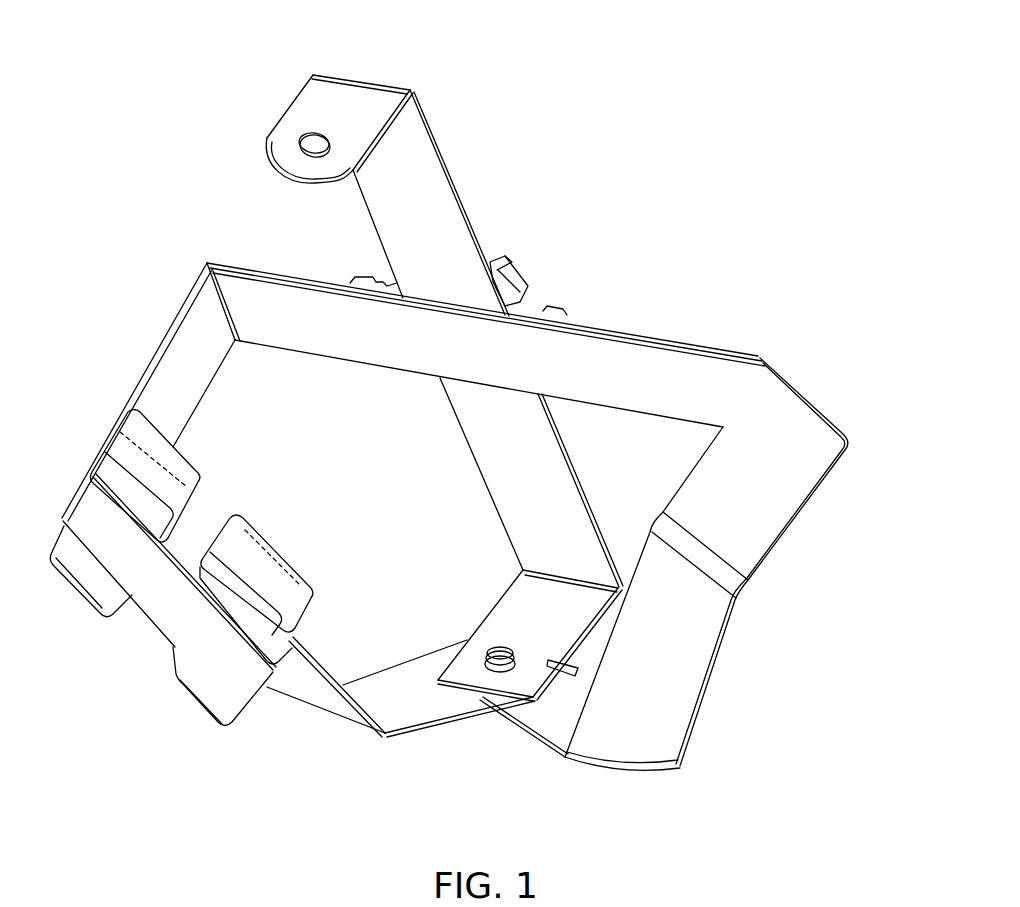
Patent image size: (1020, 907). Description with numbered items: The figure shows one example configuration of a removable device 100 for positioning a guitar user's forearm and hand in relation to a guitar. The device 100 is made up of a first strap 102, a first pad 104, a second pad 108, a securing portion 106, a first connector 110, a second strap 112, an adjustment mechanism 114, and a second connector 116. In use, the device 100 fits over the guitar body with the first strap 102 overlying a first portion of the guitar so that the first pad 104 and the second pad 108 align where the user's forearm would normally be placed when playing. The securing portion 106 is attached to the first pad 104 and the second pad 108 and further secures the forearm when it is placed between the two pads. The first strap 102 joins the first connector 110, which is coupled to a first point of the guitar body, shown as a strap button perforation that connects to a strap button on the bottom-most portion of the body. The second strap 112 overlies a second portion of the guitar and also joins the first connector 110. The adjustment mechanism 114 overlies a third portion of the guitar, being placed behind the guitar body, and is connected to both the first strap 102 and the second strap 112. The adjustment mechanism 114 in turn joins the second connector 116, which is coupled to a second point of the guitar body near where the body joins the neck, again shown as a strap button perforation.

The device 100 is at (548, 100).
The first strap 102 is at (173, 318).
The first pad 104 is at (77, 577).
The securing portion 106 is at (175, 613).
The second pad 108 is at (197, 685).
The first connector 110 is at (497, 667).
The second strap 112 is at (720, 645).
The adjustment mechanism 114 is at (510, 263).
The second connector 116 is at (303, 158).